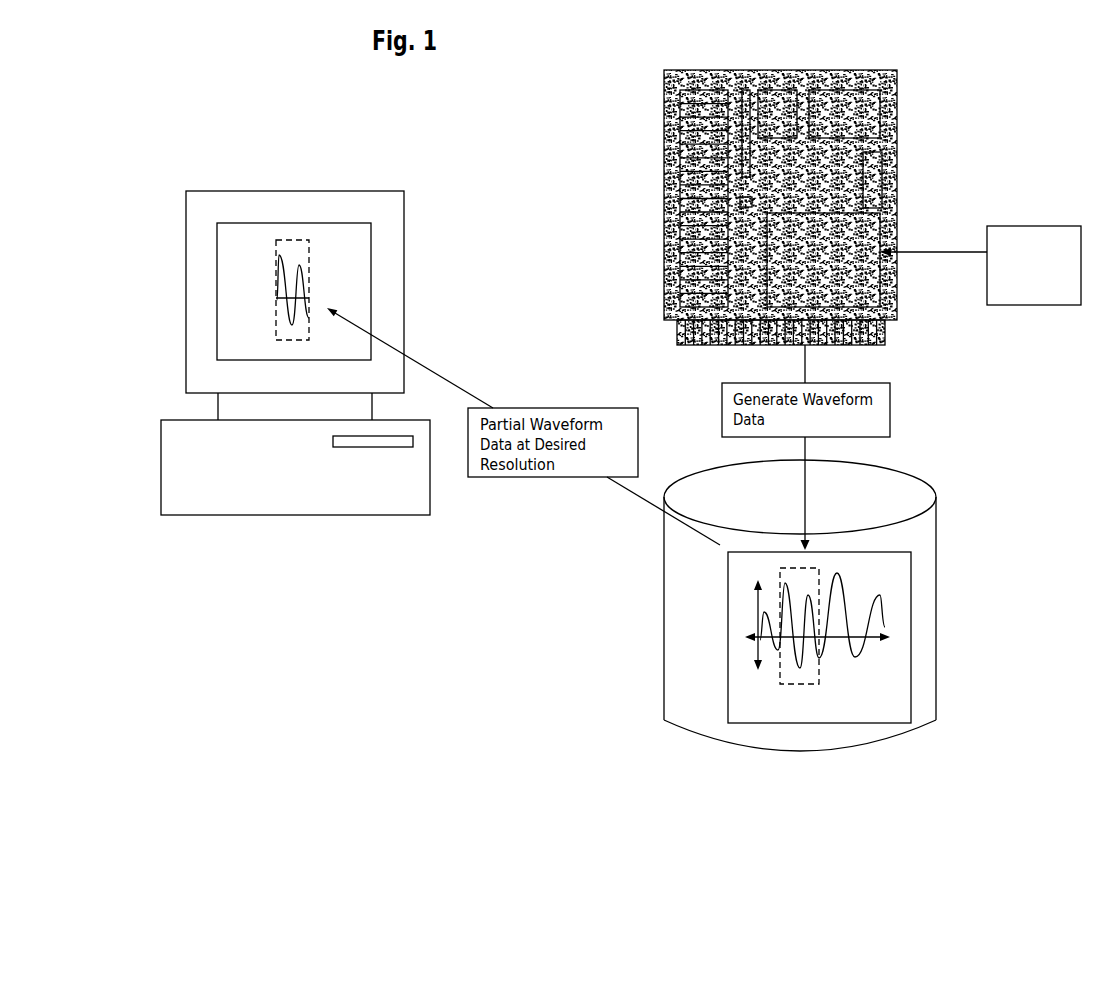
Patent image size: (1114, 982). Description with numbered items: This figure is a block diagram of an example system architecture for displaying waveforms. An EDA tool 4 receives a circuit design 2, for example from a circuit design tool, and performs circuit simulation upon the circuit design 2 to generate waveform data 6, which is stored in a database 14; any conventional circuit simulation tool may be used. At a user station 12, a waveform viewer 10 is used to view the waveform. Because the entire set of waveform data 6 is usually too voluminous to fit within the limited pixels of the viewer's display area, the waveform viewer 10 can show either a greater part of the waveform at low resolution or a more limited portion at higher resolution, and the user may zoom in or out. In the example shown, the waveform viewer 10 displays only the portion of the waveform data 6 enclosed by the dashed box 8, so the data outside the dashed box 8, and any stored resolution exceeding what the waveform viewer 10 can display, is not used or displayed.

The circuit design 2 is at (1025, 226).
The EDA tool 4 is at (663, 214).
The waveform data 6 is at (910, 564).
The dashed box 8 is at (820, 670).
The waveform viewer 10 is at (312, 256).
The user station 12 is at (183, 564).
The database 14 is at (664, 647).